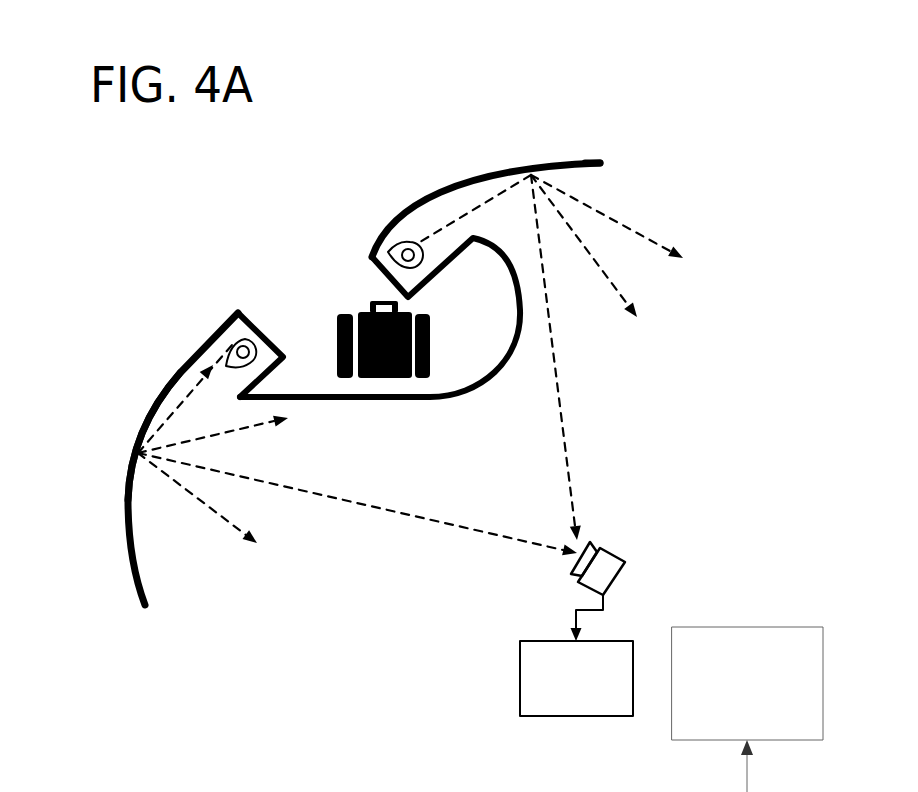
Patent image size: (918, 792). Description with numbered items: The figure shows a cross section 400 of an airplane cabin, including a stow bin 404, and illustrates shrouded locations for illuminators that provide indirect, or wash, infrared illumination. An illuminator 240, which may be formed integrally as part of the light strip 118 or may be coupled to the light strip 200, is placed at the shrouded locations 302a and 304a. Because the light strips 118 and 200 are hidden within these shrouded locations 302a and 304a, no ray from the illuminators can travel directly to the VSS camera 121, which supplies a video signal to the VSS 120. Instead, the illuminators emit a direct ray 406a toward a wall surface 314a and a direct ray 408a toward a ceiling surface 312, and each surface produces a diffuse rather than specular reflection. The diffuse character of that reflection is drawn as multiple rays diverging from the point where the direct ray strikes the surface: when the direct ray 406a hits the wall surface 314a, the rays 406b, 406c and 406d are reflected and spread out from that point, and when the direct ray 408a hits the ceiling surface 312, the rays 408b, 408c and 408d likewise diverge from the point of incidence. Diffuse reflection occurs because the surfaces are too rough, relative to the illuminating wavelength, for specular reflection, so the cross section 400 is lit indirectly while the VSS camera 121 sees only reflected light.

The cross section 400 is at (679, 369).
The shrouded location 302a is at (425, 208).
The shrouded location 304a is at (162, 392).
The ceiling surface 312 is at (592, 167).
The wall surface 314a is at (137, 562).
The stow bin 404 is at (418, 400).
The illuminator 240 is at (374, 256).
The light strip 118 is at (251, 281).
The light strip 200 is at (400, 243).
The direct ray 408a is at (493, 185).
The reflected ray 408b is at (552, 323).
The reflected ray 408c is at (607, 274).
The reflected ray 408d is at (647, 240).
The direct ray 406a is at (185, 403).
The reflected ray 406b is at (178, 483).
The reflected ray 406c is at (398, 517).
The reflected ray 406d is at (252, 428).
The VSS camera 121 is at (603, 547).
The VSS 120 is at (631, 711).